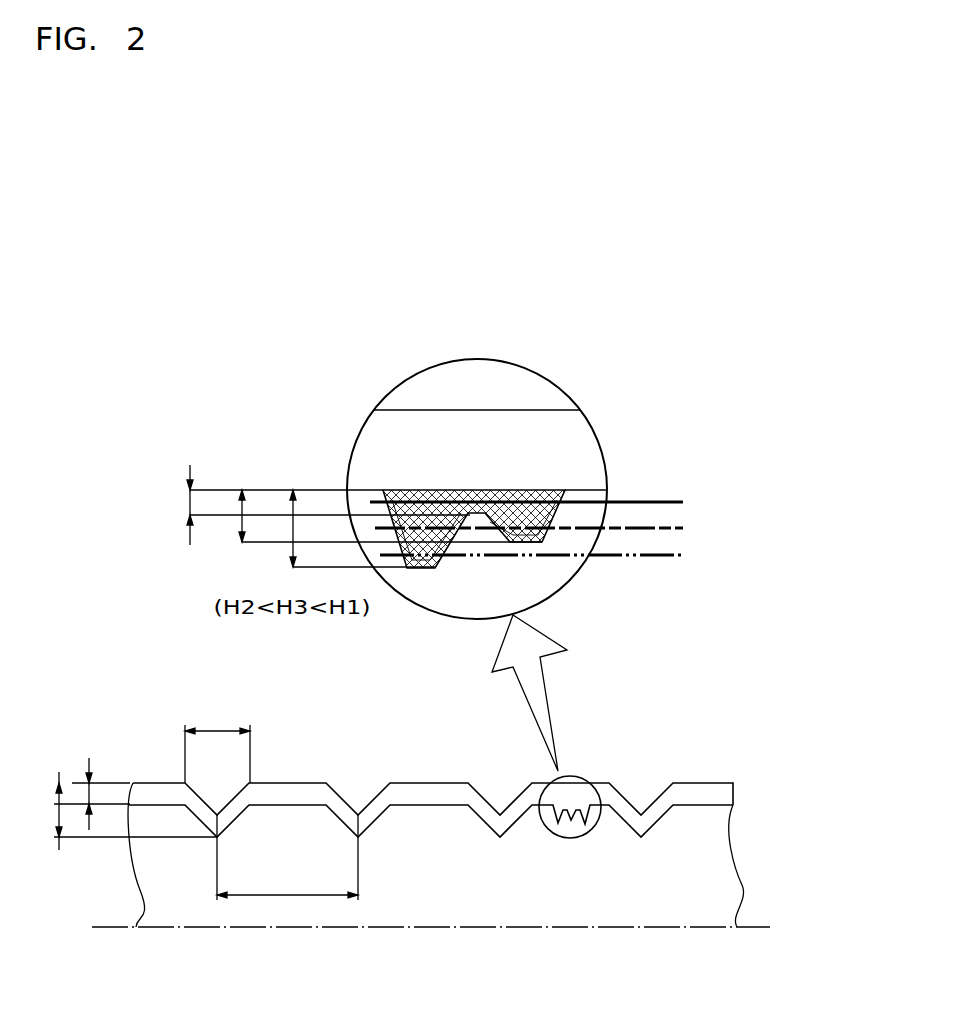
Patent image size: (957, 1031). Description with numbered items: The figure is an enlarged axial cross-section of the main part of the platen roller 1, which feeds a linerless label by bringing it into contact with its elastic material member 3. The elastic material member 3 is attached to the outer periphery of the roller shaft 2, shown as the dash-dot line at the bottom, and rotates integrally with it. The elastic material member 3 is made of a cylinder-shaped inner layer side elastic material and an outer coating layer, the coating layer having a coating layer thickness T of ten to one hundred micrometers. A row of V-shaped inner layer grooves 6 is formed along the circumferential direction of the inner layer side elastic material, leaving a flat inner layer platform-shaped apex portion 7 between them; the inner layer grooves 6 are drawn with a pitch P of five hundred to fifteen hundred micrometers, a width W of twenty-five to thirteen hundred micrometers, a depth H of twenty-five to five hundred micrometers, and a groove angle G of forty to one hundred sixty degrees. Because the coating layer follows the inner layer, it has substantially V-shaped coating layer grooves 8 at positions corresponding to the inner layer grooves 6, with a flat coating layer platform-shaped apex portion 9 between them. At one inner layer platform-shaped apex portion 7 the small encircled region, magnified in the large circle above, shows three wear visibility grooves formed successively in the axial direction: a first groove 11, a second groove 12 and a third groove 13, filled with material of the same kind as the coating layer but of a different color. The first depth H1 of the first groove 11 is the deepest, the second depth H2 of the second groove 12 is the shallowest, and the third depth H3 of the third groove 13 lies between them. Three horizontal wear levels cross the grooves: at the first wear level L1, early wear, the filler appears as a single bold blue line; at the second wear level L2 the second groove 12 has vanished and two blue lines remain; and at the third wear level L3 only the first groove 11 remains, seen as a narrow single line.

The platen roller 1 is at (620, 762).
The roller shaft 2 is at (765, 933).
The elastic material member 3 is at (785, 777).
The inner layer groove 6 is at (347, 807).
The inner layer platform-shaped apex portion 7 is at (437, 797).
The coating layer groove 8 is at (371, 797).
The coating layer platform-shaped apex portion 9 is at (420, 777).
The first groove 11 is at (419, 566).
The second groove 12 is at (469, 507).
The third groove 13 is at (528, 538).
The groove angle G is at (517, 823).
The first wear level L1 is at (683, 502).
The second wear level L2 is at (683, 528).
The third wear level L3 is at (683, 555).
The first depth H1 is at (293, 522).
The second depth H2 is at (317, 505).
The third depth H3 is at (243, 500).
The depth H is at (126, 811).
The coating layer thickness T is at (89, 797).
The width W is at (217, 742).
The pitch P is at (287, 857).